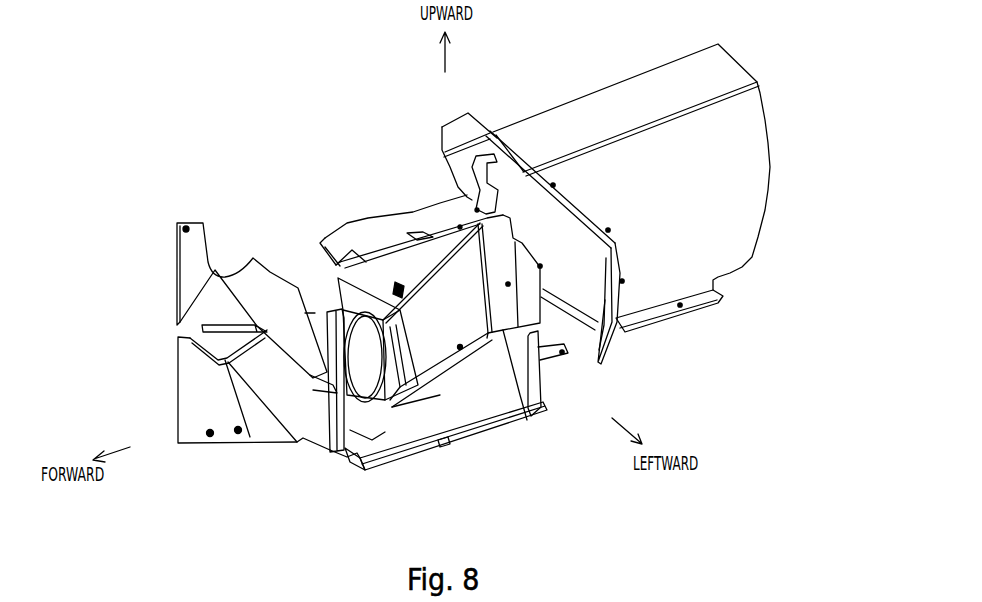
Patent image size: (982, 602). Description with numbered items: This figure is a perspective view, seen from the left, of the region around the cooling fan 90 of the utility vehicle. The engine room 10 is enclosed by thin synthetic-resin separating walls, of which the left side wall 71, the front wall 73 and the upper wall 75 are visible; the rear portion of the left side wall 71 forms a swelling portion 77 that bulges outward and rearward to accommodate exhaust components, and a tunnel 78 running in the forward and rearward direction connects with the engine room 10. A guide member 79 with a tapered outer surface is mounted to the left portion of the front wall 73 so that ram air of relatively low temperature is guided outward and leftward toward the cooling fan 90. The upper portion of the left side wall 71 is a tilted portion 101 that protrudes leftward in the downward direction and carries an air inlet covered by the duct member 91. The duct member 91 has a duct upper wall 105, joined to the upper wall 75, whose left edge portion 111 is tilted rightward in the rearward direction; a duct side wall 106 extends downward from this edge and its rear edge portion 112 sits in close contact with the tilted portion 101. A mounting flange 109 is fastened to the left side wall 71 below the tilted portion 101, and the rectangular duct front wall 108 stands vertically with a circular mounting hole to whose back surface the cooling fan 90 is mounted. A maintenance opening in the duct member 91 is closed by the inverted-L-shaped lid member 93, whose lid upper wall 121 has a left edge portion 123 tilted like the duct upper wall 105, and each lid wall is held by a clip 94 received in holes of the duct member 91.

The engine room 10 is at (354, 195).
The left side wall 71 is at (518, 400).
The front wall 73 is at (305, 313).
The upper wall 75 is at (389, 215).
The swelling portion 77 is at (610, 323).
The tunnel 78 is at (613, 102).
The guide member 79 is at (200, 448).
The cooling fan 90 is at (347, 450).
The duct member 91 is at (485, 400).
The lid member 93 is at (430, 400).
The clip 94 is at (415, 247).
The tilted portion 101 is at (512, 260).
The duct upper wall 105 is at (362, 243).
The duct side wall 106 is at (382, 430).
The duct front wall 108 is at (382, 457).
The mounting flange 109 is at (528, 350).
The left edge portion 111 is at (497, 232).
The rear edge portion 112 is at (590, 330).
The lid upper wall 121 is at (443, 250).
The left edge portion 123 is at (433, 271).